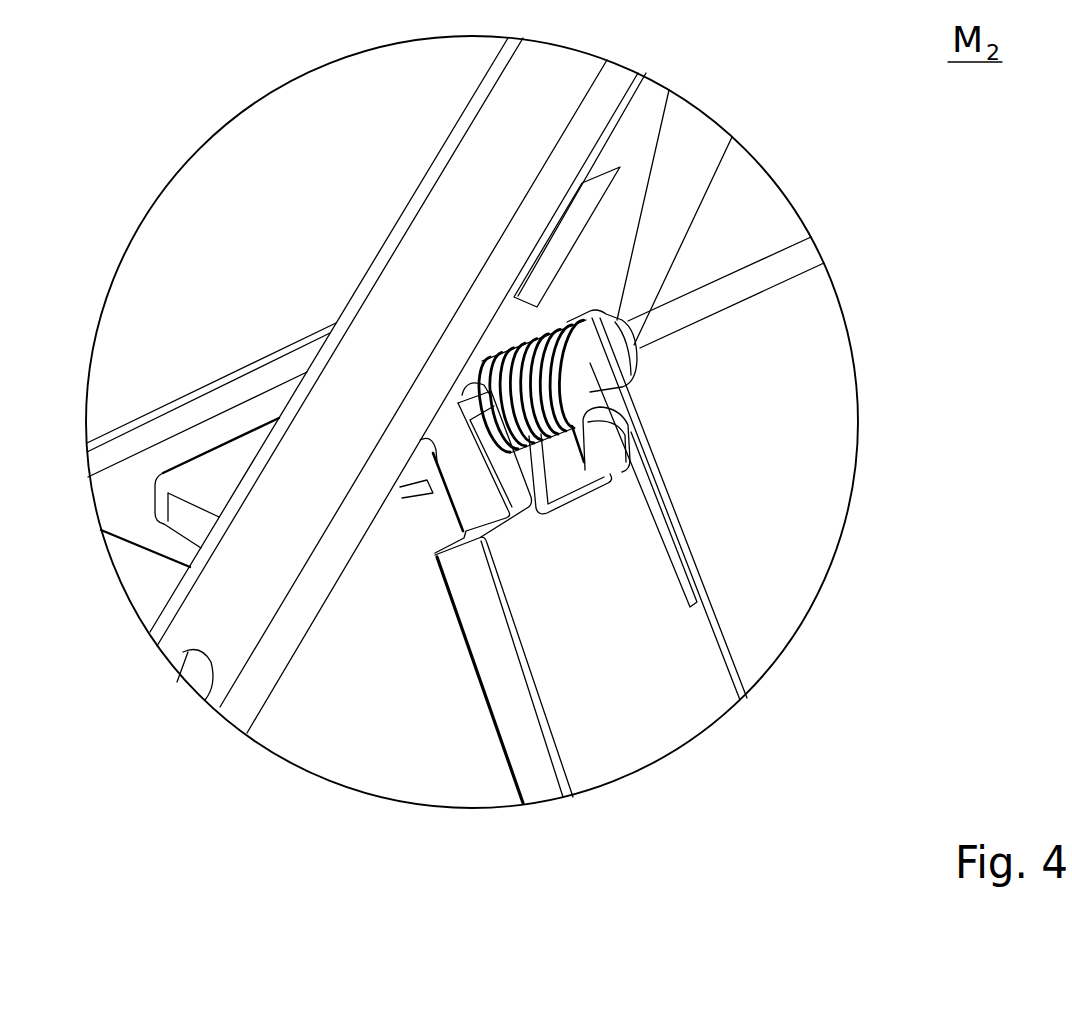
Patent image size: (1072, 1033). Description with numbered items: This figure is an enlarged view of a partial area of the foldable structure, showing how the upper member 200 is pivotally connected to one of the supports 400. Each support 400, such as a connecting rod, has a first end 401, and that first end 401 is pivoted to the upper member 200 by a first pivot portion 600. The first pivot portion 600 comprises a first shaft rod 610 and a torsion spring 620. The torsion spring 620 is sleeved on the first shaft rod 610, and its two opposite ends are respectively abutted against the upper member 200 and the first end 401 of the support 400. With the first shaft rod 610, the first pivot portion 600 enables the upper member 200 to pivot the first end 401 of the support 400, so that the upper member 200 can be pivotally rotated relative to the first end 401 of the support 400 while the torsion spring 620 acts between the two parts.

The upper member 200 is at (428, 149).
The support 400 is at (496, 747).
The first end 401 is at (544, 595).
The first pivot portion 600 is at (958, 333).
The first shaft rod 610 is at (612, 409).
The torsion spring 620 is at (640, 462).